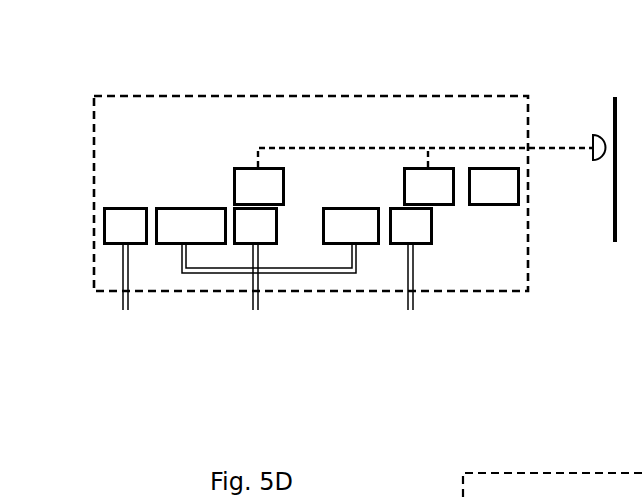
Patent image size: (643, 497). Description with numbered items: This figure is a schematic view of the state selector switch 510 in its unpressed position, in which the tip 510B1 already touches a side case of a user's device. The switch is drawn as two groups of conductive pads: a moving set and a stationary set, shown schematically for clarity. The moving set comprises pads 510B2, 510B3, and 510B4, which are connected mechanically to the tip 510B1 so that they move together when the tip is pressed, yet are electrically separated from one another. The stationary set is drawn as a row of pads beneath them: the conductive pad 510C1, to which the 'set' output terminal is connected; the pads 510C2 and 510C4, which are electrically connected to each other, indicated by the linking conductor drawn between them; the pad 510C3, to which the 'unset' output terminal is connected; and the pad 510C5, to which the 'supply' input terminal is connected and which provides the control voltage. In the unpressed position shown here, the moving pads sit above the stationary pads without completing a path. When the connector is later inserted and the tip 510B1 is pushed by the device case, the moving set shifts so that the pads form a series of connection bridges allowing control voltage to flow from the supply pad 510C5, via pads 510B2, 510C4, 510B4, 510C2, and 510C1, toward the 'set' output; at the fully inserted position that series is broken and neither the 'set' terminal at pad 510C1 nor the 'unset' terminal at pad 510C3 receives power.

The state selector switch (SSS) 510 is at (173, 156).
The tip 510B1 is at (593, 135).
The pad 510B2 is at (493, 167).
The pad 510B3 is at (412, 162).
The pad 510B4 is at (241, 162).
The conductive pad ('set' output terminal pad) 510C1 is at (112, 245).
The pad 510C2 is at (164, 248).
The pad ('unset' output terminal pad) 510C3 is at (277, 252).
The pad 510C4 is at (332, 245).
The pad ('supply' input terminal pad) 510C5 is at (437, 245).